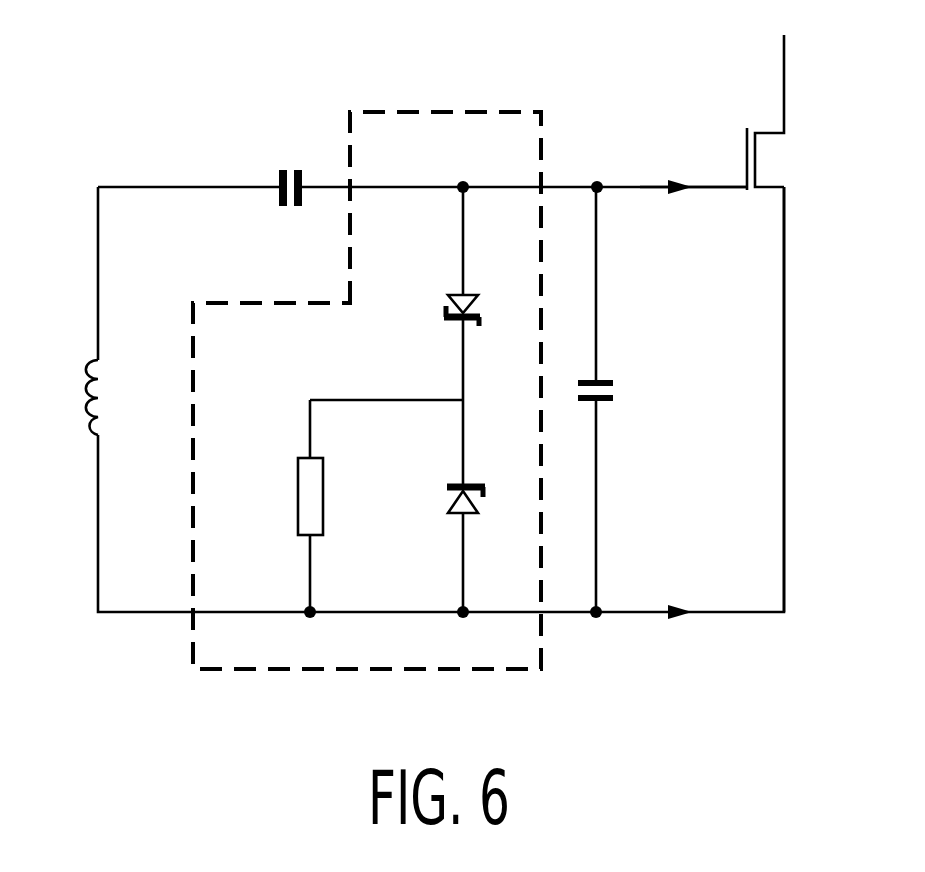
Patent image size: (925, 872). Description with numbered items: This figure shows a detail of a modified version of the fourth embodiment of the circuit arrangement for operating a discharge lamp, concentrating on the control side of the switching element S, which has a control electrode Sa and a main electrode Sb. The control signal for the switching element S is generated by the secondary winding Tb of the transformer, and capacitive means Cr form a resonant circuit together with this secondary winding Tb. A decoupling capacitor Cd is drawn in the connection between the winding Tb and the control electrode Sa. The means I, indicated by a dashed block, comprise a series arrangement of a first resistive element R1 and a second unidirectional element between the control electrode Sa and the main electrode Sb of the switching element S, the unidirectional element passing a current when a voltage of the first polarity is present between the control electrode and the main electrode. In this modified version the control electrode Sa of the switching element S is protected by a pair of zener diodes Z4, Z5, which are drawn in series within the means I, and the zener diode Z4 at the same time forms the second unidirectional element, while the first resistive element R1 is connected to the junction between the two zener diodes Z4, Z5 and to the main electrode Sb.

The means I is at (464, 108).
The decoupling capacitor Cd is at (290, 180).
The secondary winding of the transformer Tb is at (85, 397).
The zener diode Z4 is at (450, 305).
The zener diode Z5 is at (447, 500).
The first resistive element R1 is at (298, 492).
The capacitive means Cr is at (612, 391).
The switching element S is at (772, 162).
The control electrode Sa is at (707, 187).
The main electrode Sb is at (785, 262).